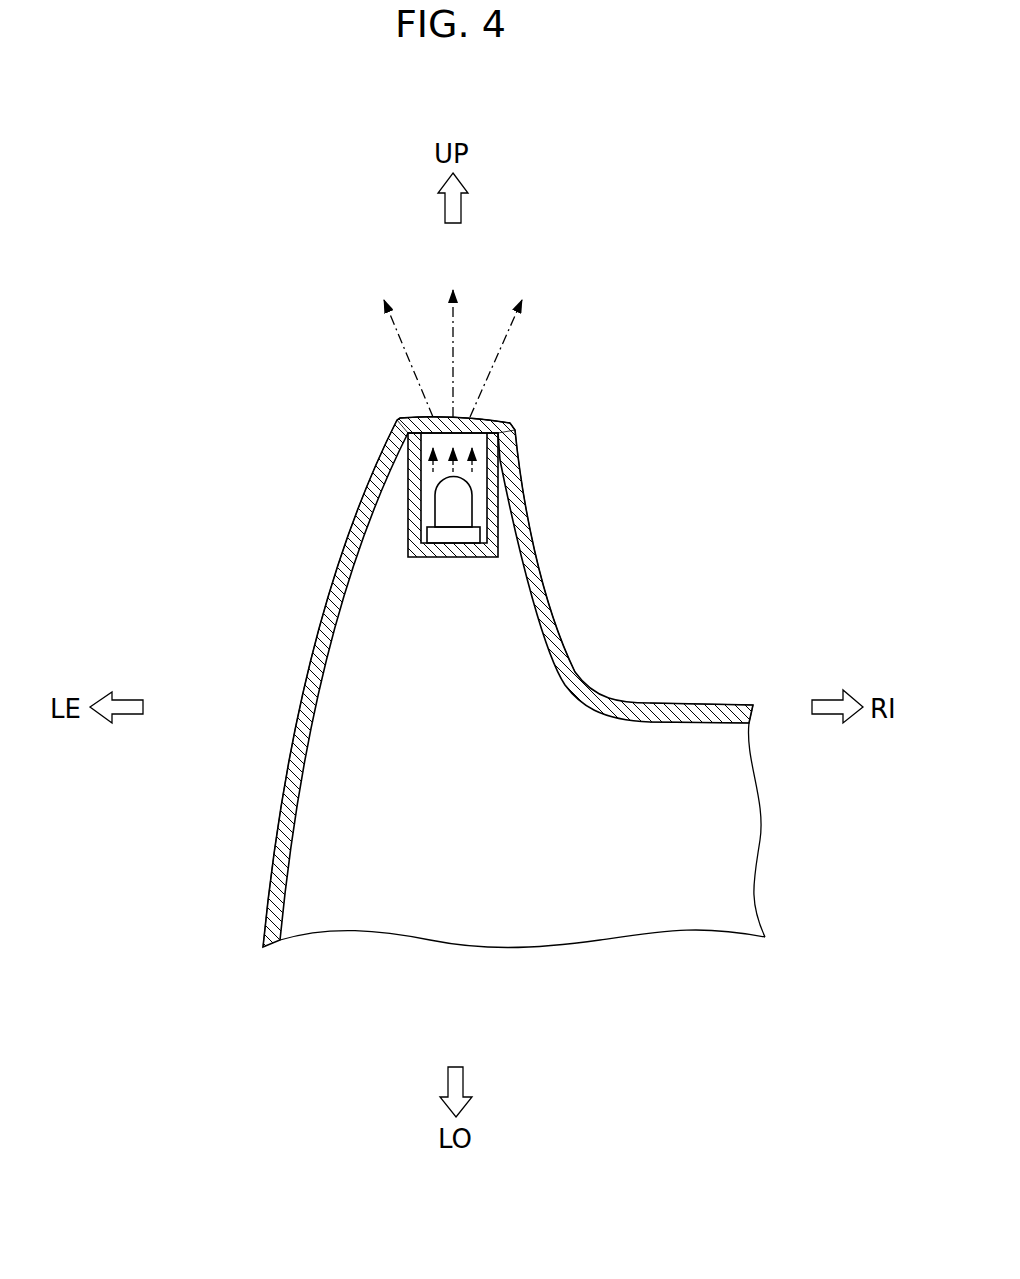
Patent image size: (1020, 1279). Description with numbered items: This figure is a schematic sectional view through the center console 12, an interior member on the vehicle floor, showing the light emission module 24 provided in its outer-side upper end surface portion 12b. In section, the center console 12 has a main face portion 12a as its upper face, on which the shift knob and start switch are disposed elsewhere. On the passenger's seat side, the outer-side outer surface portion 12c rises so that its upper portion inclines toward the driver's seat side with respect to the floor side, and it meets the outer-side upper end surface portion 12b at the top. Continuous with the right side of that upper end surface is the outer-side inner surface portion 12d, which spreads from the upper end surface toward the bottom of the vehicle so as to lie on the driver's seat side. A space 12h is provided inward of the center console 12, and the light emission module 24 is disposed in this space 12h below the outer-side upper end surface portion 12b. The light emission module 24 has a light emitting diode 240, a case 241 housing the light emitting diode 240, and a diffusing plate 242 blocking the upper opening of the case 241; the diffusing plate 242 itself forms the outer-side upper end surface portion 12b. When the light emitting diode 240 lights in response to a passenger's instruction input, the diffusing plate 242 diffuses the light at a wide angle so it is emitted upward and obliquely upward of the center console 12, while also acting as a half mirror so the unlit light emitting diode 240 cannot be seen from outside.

The center console 12 is at (537, 573).
The main face portion 12a is at (692, 702).
The outer-side upper end surface portion 12b is at (408, 411).
The outer-side outer surface portion 12c is at (314, 628).
The outer-side inner surface portion 12d is at (545, 586).
The space 12h is at (376, 803).
The light emission module 24 is at (405, 513).
The light emitting diode (LED) 240 is at (462, 505).
The case 241 is at (462, 557).
The diffusing plate 242 is at (488, 423).